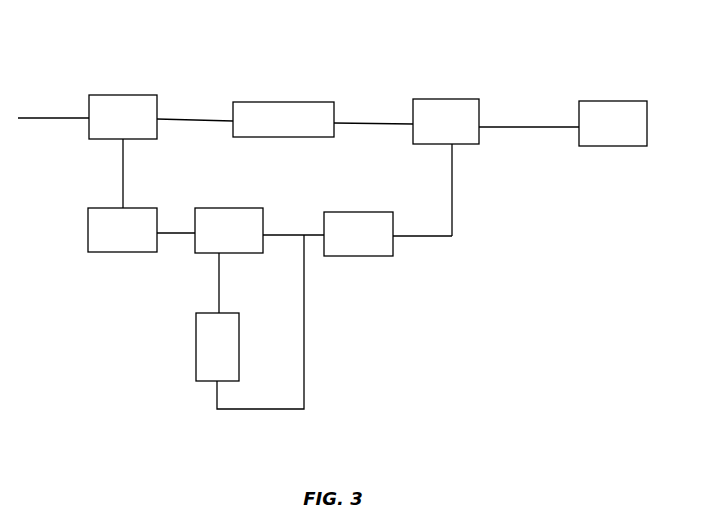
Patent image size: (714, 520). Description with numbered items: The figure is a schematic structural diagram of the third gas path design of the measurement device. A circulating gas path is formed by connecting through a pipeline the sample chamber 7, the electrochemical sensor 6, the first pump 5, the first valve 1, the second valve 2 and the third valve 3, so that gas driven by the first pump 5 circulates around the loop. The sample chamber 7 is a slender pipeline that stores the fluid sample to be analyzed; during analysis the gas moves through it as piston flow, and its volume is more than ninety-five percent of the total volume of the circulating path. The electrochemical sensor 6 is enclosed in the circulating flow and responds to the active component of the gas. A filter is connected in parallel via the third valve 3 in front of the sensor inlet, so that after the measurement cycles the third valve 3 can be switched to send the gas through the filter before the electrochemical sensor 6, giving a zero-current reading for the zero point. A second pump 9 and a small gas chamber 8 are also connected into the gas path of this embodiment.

The first valve 1 is at (130, 81).
The second valve 2 is at (452, 85).
The third valve 3 is at (237, 197).
The first pump 5 is at (133, 196).
The electrochemical sensor 6 is at (361, 198).
The sample chamber 7 is at (284, 80).
The small gas chamber 8 is at (194, 374).
The second pump 9 is at (617, 88).